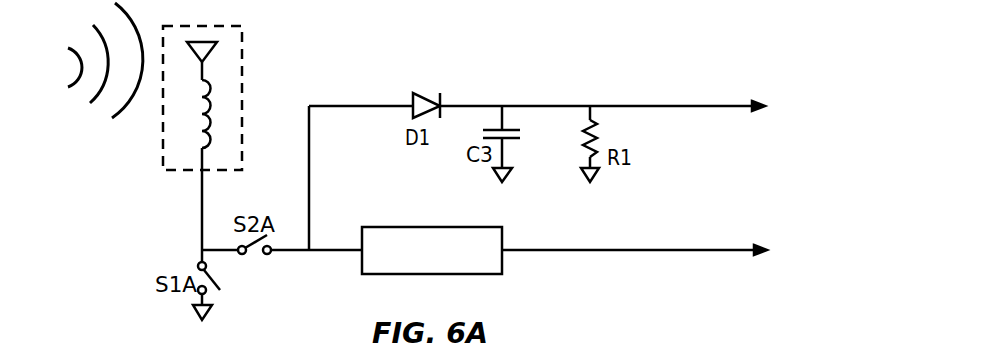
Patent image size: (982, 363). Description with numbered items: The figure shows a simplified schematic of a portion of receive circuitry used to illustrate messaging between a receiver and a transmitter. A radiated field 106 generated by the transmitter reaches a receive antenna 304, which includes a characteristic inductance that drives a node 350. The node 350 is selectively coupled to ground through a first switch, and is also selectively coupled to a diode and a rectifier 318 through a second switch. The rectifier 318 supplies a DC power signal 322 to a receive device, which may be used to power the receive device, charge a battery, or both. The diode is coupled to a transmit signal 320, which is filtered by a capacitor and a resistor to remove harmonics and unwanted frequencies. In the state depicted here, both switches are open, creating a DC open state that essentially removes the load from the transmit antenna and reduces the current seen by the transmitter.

The radiated field 106 is at (97, 122).
The receive antenna 304 is at (242, 52).
The node 350 is at (202, 192).
The rectifier 318 is at (388, 227).
The transmit signal 320 is at (677, 106).
The DC power signal 322 is at (707, 250).